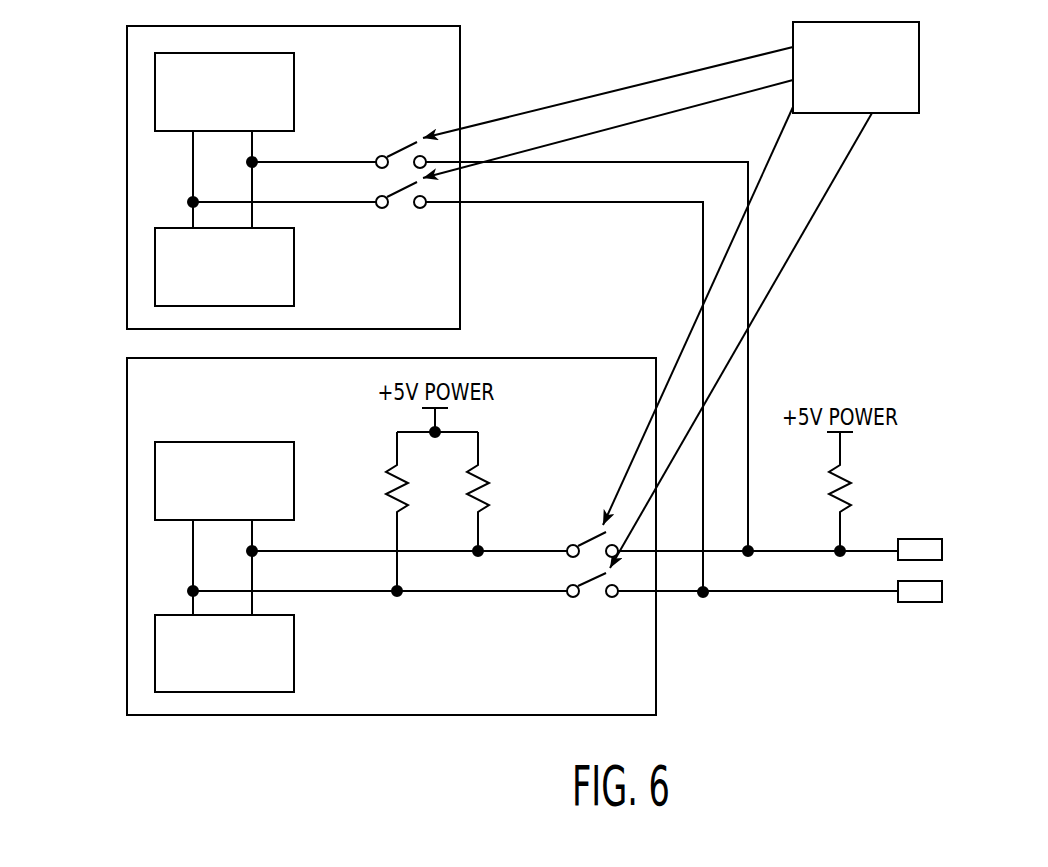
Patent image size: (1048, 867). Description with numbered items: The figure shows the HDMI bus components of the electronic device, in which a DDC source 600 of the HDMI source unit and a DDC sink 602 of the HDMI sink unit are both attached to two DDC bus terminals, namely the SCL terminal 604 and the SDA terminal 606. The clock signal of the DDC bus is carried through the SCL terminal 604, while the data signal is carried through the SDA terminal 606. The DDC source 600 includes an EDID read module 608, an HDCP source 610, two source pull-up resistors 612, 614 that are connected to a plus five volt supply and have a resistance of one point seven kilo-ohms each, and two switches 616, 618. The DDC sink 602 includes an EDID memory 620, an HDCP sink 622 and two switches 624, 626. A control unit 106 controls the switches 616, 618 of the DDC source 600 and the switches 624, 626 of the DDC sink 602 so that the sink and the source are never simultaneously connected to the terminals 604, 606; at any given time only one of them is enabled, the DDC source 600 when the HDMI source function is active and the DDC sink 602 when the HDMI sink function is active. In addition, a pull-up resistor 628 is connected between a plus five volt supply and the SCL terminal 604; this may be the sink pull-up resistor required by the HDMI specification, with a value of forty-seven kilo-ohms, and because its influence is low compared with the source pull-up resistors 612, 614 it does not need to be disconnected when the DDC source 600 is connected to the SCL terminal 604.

The control unit 106 is at (919, 73).
The DDC source 600 is at (127, 398).
The DDC sink 602 is at (127, 49).
The SCL terminal 604 is at (918, 538).
The SDA terminal 606 is at (918, 602).
The EDID read module 608 is at (155, 483).
The HDCP source 610 is at (155, 653).
The source pull-up resistor 612 is at (387, 487).
The source pull-up resistor 614 is at (490, 487).
The switch 616 is at (588, 583).
The switch 618 is at (590, 540).
The EDID memory 620 is at (155, 98).
The HDCP sink 622 is at (155, 273).
The switch 624 is at (393, 152).
The switch 626 is at (395, 206).
The pull-up resistor 628 is at (848, 487).